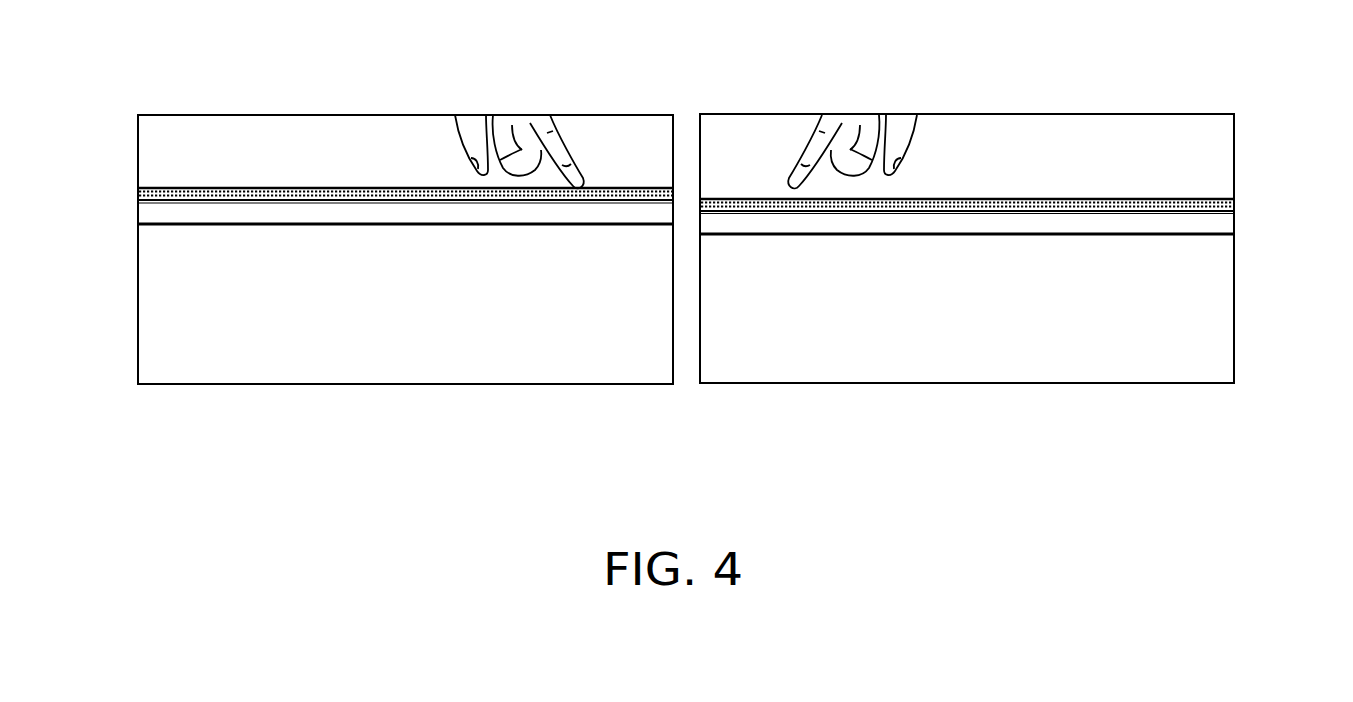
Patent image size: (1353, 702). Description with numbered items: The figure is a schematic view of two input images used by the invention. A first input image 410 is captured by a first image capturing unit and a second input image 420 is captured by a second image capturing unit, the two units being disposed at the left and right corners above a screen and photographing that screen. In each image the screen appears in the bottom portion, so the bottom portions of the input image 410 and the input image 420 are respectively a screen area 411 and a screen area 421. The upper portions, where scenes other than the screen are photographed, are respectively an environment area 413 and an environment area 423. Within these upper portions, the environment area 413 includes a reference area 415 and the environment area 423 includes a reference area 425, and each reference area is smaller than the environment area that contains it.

The first input image 410 is at (183, 387).
The screen area 411 is at (206, 327).
The environment area 413 is at (212, 133).
The reference area 415 is at (197, 189).
The second input image 420 is at (1188, 385).
The screen area 421 is at (1163, 327).
The environment area 423 is at (1158, 130).
The reference area 425 is at (1175, 198).